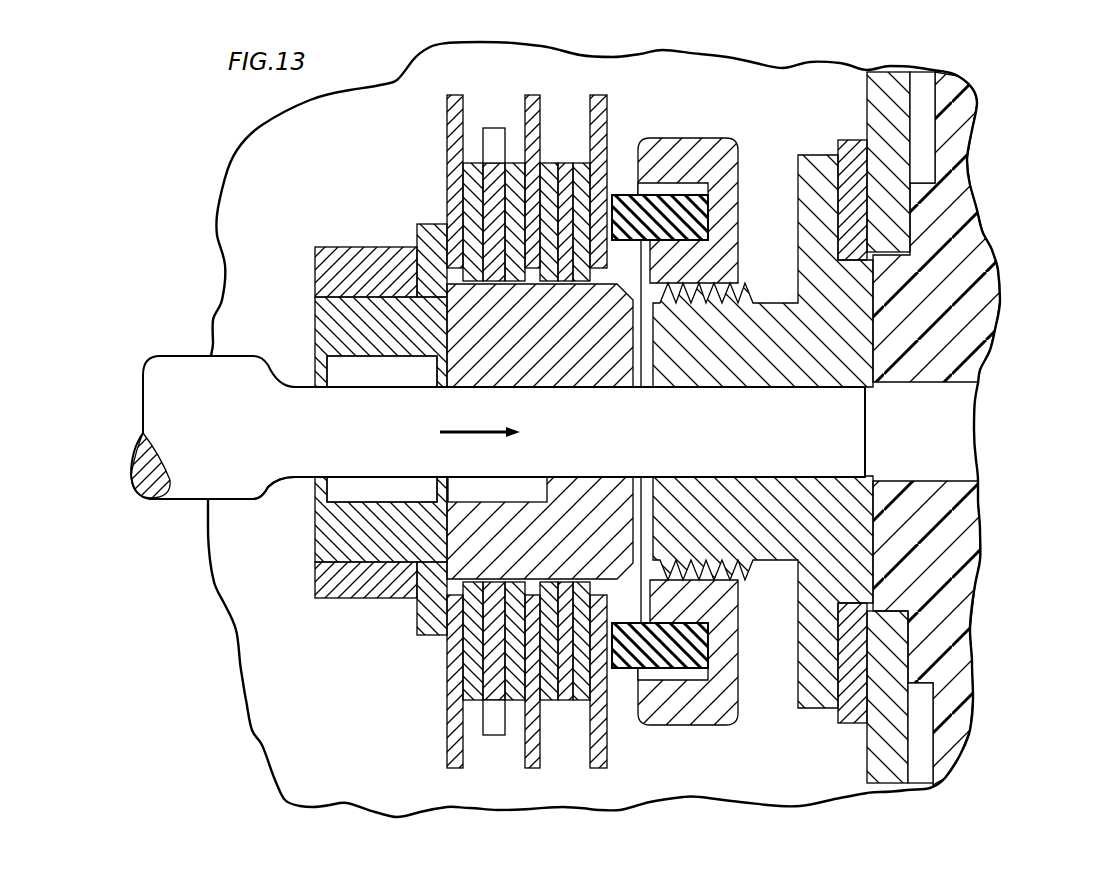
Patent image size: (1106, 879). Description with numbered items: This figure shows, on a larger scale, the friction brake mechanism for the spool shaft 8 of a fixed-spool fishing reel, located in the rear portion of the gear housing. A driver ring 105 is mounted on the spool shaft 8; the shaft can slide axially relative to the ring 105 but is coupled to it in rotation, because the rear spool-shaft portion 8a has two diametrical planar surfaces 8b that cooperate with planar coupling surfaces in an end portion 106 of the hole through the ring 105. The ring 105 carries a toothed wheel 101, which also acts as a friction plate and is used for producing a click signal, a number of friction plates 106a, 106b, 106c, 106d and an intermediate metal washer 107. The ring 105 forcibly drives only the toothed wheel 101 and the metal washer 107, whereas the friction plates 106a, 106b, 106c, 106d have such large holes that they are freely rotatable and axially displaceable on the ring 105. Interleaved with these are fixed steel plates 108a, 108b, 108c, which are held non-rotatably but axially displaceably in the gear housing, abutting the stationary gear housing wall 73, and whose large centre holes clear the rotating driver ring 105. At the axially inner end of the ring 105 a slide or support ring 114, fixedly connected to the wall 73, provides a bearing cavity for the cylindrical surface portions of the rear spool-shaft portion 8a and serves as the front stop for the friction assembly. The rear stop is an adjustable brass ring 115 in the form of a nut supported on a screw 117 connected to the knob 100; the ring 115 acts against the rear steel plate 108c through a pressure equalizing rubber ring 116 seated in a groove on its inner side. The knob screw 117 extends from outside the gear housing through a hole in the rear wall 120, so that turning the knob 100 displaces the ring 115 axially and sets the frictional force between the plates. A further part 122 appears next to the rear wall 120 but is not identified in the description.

The spool shaft 8 is at (232, 357).
The rear spool-shaft portion 8a is at (293, 478).
The diametrical planar surfaces 8b is at (348, 381).
The stationary gear housing wall 73 is at (360, 718).
The knob 100 is at (960, 245).
The toothed wheel 101 is at (494, 128).
The ring 105 is at (470, 557).
The end portion of the hole in the ring 106 is at (552, 478).
The friction plate 106a is at (473, 163).
The friction plate 106b is at (493, 183).
The friction plate 106c is at (516, 193).
The friction plate 106d is at (578, 232).
The intermediate metal washer 107 is at (566, 166).
The fixed plate 108a is at (455, 96).
The fixed plate 108b is at (537, 87).
The fixed plate 108c is at (600, 96).
The support ring 114 is at (371, 262).
The adjustable ring 115 is at (722, 222).
The pressure equalizing rubber ring 116 is at (708, 200).
The screw 117 is at (862, 322).
The rear wall of the gear housing 120 is at (893, 145).
The spacer 122 is at (846, 160).